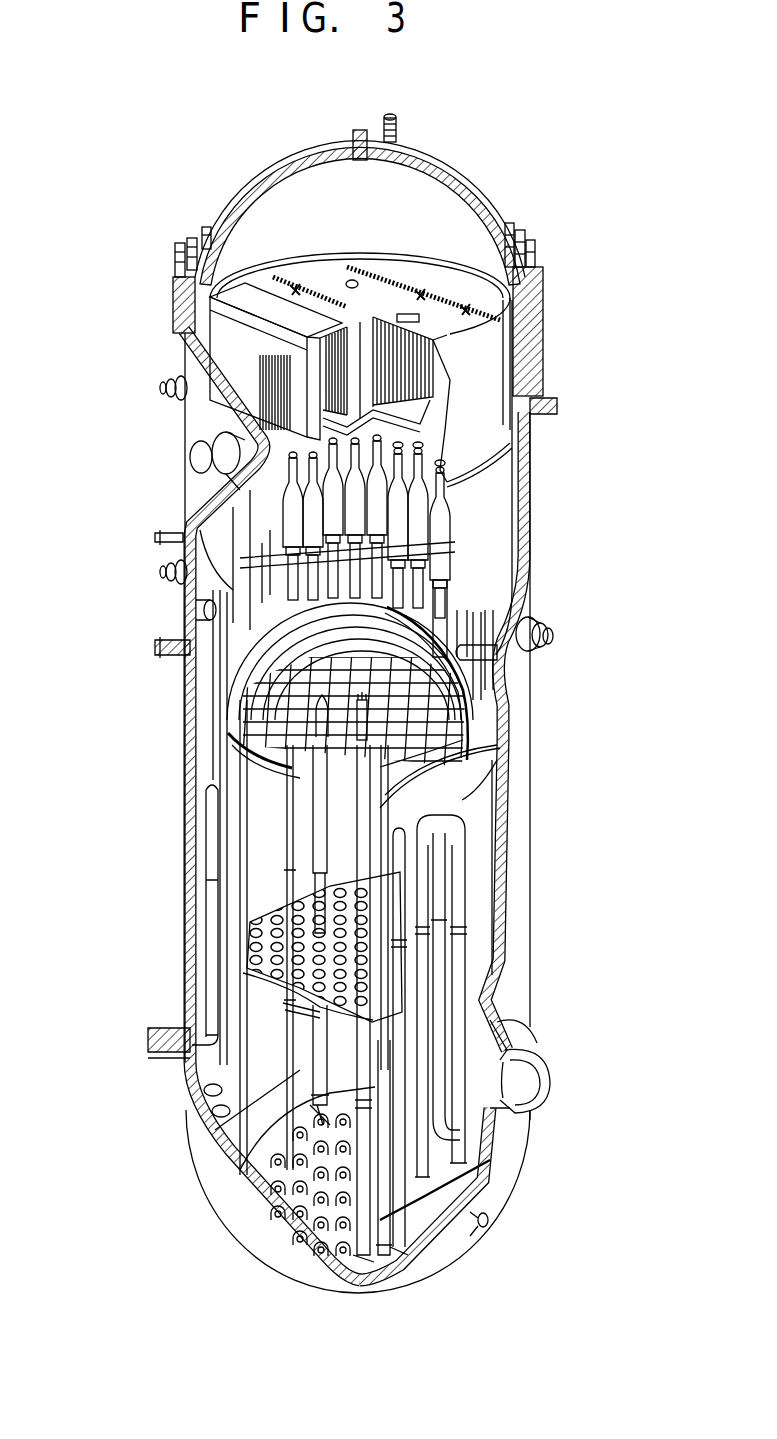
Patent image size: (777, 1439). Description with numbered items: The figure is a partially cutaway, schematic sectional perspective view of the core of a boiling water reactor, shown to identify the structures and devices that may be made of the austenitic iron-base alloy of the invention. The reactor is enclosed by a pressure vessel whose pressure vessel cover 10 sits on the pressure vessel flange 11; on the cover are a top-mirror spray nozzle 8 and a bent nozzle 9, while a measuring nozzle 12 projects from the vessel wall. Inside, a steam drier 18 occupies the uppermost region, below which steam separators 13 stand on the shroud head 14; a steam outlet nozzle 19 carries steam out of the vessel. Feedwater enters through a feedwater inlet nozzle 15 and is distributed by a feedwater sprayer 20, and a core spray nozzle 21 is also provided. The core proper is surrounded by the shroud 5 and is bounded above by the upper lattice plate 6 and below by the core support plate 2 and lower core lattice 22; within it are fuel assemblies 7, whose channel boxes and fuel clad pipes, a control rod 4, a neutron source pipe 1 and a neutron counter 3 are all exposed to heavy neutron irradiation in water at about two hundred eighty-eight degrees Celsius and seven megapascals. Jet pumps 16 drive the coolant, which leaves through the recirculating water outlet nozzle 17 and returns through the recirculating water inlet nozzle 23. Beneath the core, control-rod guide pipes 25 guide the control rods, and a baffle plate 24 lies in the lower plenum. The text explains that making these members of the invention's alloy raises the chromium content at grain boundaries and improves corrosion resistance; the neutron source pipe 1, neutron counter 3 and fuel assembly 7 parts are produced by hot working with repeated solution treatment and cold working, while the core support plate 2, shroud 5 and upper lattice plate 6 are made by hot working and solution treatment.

The neutron source pipe 1 is at (290, 810).
The core support plate 2 is at (195, 950).
The neutron counter 3 is at (210, 775).
The control rod 4 is at (395, 875).
The shroud 5 is at (237, 848).
The upper lattice plate 6 is at (218, 708).
The fuel assembly 7 is at (480, 775).
The top-mirror spray nozzle 8 is at (400, 128).
The bent nozzle 9 is at (353, 140).
The pressure vessel cover 10 is at (240, 188).
The pressure vessel flange 11 is at (543, 336).
The measuring nozzle 12 is at (557, 405).
The steam separator 13 is at (452, 522).
The shroud head 14 is at (500, 614).
The feedwater inlet nozzle 15 is at (553, 636).
The jet pump 16 is at (467, 905).
The recirculating water outlet nozzle 17 is at (553, 1082).
The steam drier 18 is at (226, 352).
The steam outlet nozzle 19 is at (190, 462).
The feedwater sprayer 20 is at (194, 608).
The core spray nozzle 21 is at (154, 648).
The lower core lattice 22 is at (250, 1005).
The recirculating water inlet nozzle 23 is at (148, 1040).
The baffle plate 24 is at (200, 1090).
The control-rod guide pipe 25 is at (350, 1165).